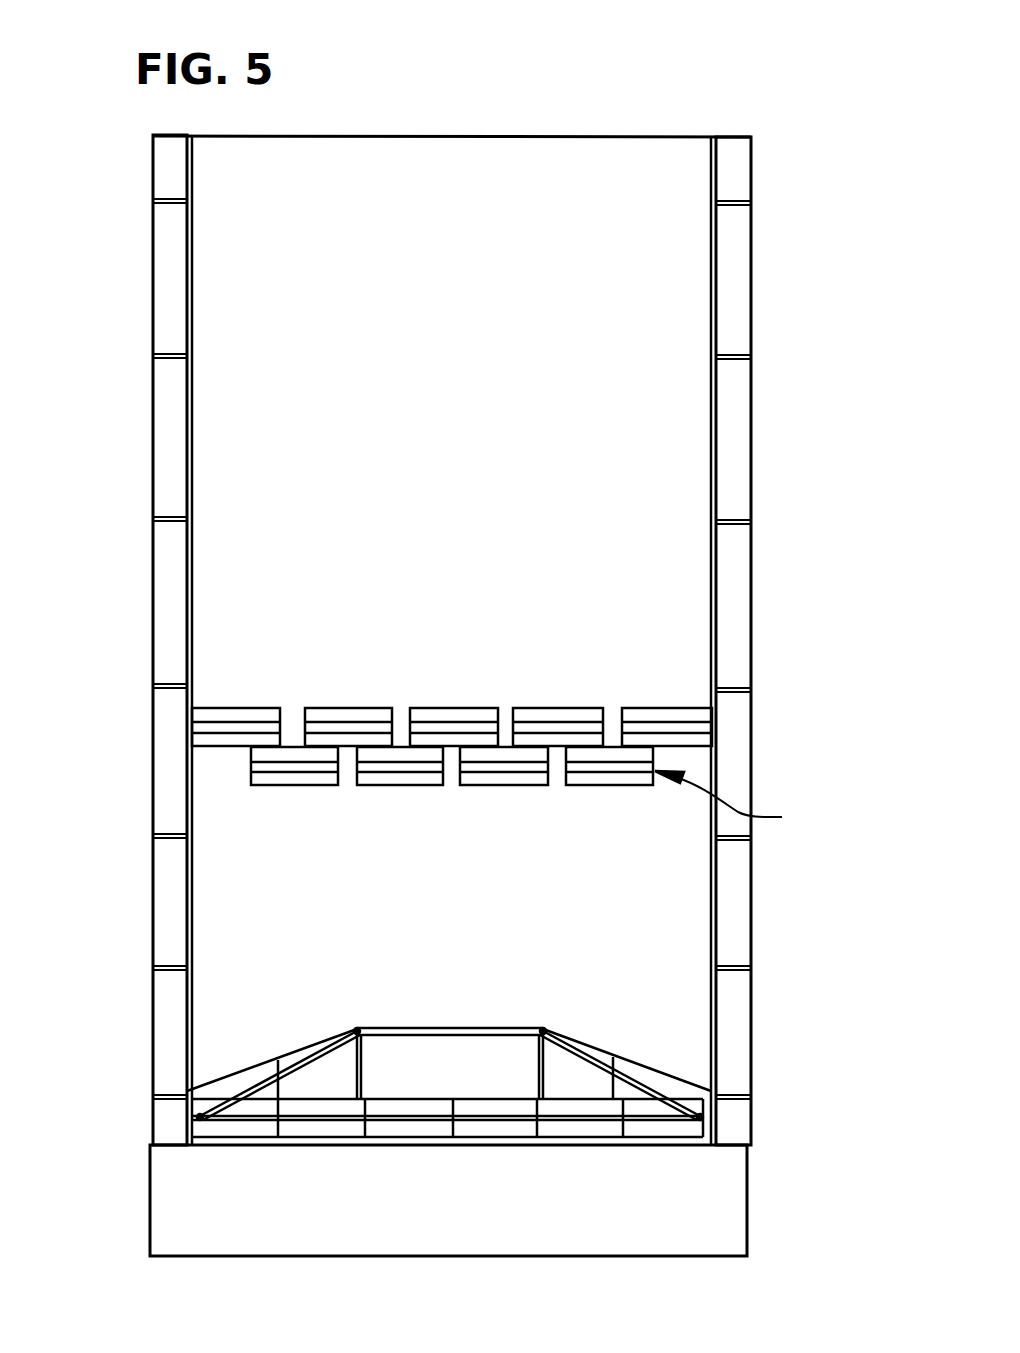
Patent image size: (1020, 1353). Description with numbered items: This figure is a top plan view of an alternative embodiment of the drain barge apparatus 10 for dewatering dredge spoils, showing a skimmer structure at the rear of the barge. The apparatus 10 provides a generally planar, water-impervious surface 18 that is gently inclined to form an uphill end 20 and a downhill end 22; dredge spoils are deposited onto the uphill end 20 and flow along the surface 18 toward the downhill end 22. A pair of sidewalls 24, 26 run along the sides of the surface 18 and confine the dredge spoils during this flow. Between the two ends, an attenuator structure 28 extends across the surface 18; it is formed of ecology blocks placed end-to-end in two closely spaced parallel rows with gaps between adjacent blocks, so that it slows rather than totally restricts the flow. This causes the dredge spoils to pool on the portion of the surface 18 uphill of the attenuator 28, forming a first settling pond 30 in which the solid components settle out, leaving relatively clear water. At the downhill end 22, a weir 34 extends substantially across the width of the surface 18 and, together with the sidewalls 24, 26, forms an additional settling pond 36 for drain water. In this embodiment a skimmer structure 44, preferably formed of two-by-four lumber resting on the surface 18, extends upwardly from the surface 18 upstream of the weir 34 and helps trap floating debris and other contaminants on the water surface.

In FIG. 5, the apparatus for dewatering dredge spoils 10 is at (522, 90).
In FIG. 5, the surface 18 is at (460, 251).
In FIG. 5, the uphill end 20 is at (153, 172).
In FIG. 5, the downhill end 22 is at (150, 1192).
In FIG. 5, the sidewall 24 is at (187, 613).
In FIG. 5, the sidewall 26 is at (740, 424).
In FIG. 5, the attenuator structure 28 is at (502, 749).
In FIG. 5, the first retention area or settling pond 30 is at (595, 574).
The weir 34 is at (692, 1128).
In FIG. 5, the additional settling pond 36 is at (322, 924).
The skimmer structure 44 is at (465, 1030).